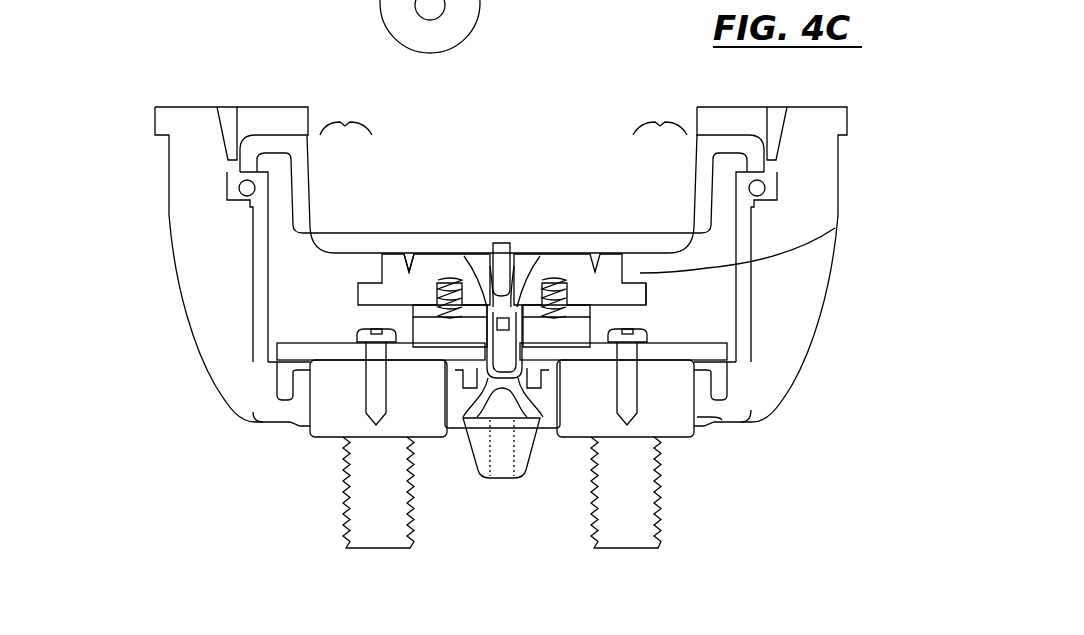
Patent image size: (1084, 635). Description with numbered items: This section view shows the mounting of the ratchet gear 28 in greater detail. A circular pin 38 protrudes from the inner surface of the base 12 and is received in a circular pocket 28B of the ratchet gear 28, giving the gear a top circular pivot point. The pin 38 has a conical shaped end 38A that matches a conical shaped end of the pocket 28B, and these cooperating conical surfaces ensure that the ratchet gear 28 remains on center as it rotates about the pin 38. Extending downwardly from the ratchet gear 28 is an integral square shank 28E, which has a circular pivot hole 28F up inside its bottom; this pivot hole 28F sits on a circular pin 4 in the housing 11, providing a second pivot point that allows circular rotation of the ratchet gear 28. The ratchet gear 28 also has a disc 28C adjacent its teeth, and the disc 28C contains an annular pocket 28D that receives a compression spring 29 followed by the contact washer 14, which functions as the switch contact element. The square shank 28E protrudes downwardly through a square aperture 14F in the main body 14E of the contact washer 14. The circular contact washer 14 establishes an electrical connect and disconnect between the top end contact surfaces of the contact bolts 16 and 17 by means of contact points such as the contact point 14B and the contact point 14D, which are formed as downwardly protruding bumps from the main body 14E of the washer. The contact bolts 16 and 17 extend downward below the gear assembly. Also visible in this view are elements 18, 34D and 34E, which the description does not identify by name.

The circular pin 4 is at (483, 380).
The housing 11 is at (182, 217).
The base 12 is at (367, 222).
The contact washer 14 is at (440, 340).
The contact point 14B is at (712, 402).
The contact point 14D is at (368, 358).
The main body 14E is at (578, 330).
The square aperture 14F is at (455, 332).
The contact bolt 16 is at (643, 497).
The contact bolt 17 is at (370, 496).
The base 18 is at (282, 353).
The ratchet gear 28 is at (653, 292).
The circular pocket 28B is at (486, 256).
The disc 28C is at (366, 298).
The annular pocket 28D is at (632, 266).
The square shank 28E is at (697, 370).
The circular pivot hole 28F is at (730, 422).
The compression spring 29 is at (593, 312).
The retaining plate 34D is at (417, 343).
The screw 34E is at (630, 333).
The circular pin 38 is at (515, 258).
The conical shaped end 38A is at (455, 277).